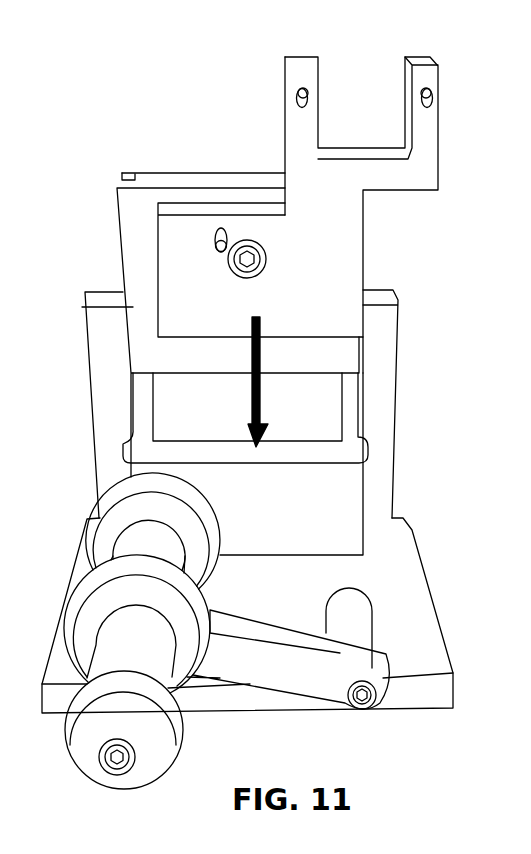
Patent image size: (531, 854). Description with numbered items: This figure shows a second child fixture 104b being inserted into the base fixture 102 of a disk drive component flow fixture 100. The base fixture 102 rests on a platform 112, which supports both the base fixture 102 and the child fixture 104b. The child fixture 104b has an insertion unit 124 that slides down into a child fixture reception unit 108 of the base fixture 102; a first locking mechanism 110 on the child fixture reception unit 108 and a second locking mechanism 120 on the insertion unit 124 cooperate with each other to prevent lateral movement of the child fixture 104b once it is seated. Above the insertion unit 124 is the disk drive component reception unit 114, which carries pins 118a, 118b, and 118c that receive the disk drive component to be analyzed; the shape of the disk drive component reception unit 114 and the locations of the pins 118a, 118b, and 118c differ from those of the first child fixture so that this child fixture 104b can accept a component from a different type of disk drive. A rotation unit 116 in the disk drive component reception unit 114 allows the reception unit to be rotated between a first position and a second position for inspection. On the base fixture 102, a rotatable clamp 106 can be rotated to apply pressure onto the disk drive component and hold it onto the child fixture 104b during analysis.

The disk drive component flow fixture 100 is at (110, 72).
The base fixture 102 is at (432, 531).
The child fixture 104b is at (430, 160).
The rotatable clamp 106 is at (251, 680).
The child fixture reception unit 108 is at (397, 322).
The first locking mechanism 110 is at (145, 401).
The platform 112 is at (403, 692).
The disk drive component reception unit 114 is at (355, 230).
The rotation unit 116 is at (268, 250).
The pin 118a is at (297, 98).
The pin 118b is at (432, 95).
The pin 118c is at (214, 236).
The second locking mechanism 120 is at (121, 179).
The insertion unit 124 is at (208, 181).